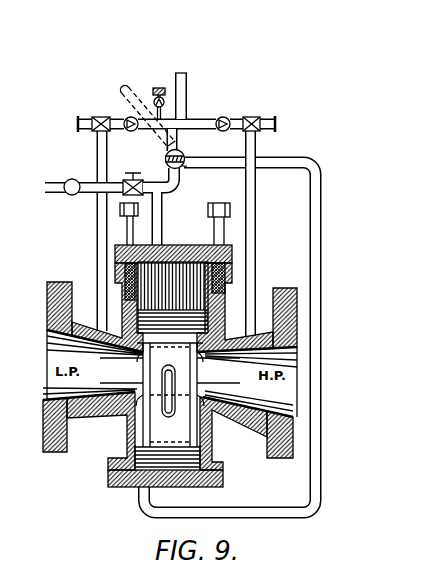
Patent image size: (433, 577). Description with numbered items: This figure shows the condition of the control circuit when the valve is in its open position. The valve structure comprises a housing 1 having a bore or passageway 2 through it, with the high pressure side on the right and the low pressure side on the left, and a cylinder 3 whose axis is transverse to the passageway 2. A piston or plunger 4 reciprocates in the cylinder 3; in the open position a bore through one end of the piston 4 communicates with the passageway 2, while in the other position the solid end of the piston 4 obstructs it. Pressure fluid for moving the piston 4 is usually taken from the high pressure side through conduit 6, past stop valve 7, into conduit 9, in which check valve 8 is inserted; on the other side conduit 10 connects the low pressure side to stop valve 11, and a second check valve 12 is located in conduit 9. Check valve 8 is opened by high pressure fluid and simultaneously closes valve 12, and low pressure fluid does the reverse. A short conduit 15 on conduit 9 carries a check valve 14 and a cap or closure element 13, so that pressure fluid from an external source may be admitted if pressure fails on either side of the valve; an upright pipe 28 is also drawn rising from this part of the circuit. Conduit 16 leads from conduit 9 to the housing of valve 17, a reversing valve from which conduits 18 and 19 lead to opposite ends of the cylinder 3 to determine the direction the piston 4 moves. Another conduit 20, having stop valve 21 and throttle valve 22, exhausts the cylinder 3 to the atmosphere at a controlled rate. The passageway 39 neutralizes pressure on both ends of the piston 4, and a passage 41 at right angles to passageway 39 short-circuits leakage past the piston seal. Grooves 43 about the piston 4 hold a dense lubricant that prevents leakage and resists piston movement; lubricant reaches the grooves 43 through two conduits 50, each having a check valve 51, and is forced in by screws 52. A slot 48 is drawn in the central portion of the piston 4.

The housing 1 is at (45, 300).
The bore or passageway 2 is at (52, 383).
The cylinder 3 is at (127, 435).
The piston or plunger 4 is at (183, 432).
The conduit 6 is at (253, 195).
The stop valve 7 is at (257, 118).
The check valve 8 is at (222, 117).
The conduit 9 is at (196, 120).
The conduit 10 is at (95, 202).
The stop valve 11 is at (94, 118).
The second check valve 12 is at (126, 117).
The cap or closure element 13 is at (158, 88).
The check valve 14 is at (155, 104).
The short conduit 15 is at (153, 127).
The conduit 16 is at (180, 138).
The valve 17 is at (186, 165).
The conduit 18 is at (162, 215).
The conduit 19 is at (311, 232).
The conduit 20 is at (181, 191).
The stop valve 21 is at (125, 180).
The throttle valve 22 is at (67, 179).
The vent pipe 28 is at (188, 75).
The passageway 39 is at (188, 157).
The passage 41 is at (166, 155).
The grooves 43 is at (147, 366).
The slot 48 is at (165, 374).
The conduits 50 is at (219, 301).
The check valves 51 is at (122, 298).
The screws 52 is at (122, 220).